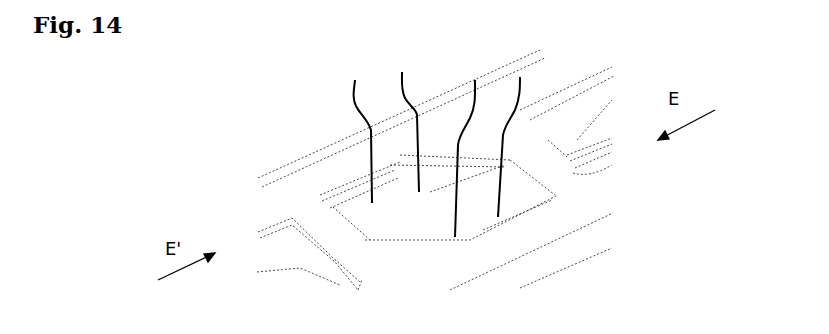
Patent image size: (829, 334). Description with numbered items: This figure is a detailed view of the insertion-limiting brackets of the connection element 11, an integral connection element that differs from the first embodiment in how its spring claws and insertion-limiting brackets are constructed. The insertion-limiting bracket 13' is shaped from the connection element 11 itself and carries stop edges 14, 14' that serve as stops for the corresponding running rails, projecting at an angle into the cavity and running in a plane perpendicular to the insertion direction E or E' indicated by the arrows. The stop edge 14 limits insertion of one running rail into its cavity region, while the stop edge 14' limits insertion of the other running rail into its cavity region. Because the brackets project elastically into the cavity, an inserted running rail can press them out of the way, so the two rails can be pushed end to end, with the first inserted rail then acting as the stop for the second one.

The connection element 11 is at (207, 117).
The insertion-limiting bracket 13' is at (440, 135).
The stop edge 14' is at (406, 121).
The stop edge 14 is at (472, 147).